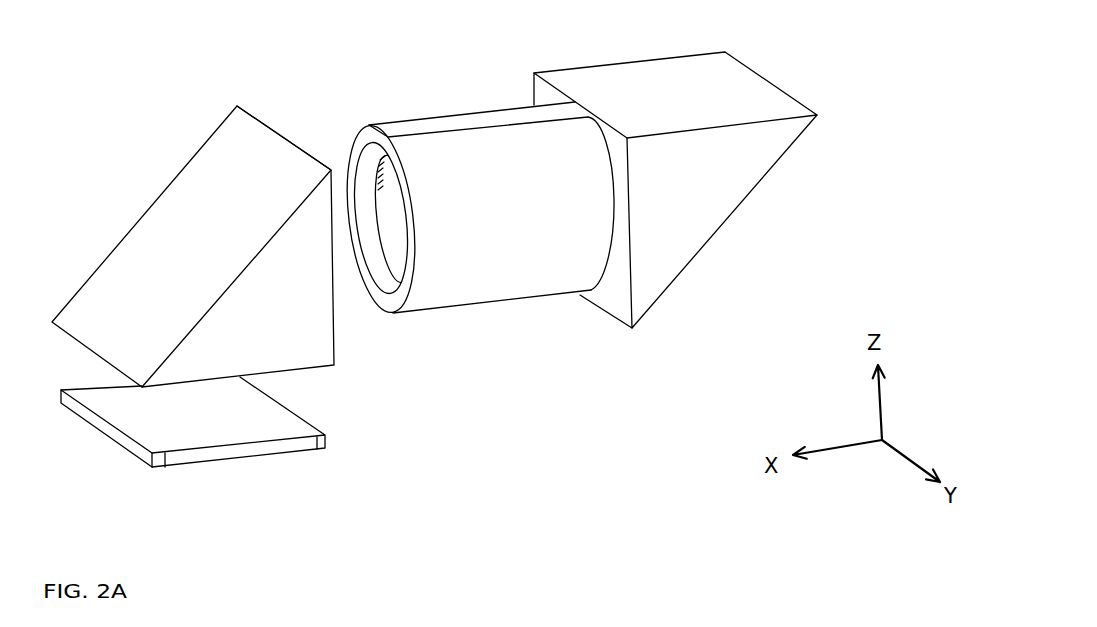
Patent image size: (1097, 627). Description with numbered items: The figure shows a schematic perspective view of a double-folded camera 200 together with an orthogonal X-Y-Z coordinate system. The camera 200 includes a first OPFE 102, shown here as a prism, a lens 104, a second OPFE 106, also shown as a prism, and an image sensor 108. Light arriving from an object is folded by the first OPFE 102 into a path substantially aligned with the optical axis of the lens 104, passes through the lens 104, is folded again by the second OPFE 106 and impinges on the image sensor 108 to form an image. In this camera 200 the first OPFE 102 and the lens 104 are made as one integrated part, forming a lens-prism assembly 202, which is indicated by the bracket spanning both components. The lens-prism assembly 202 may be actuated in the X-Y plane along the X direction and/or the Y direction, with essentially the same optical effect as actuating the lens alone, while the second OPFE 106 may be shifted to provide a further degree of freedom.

The double-folded camera 200 is at (429, 56).
The first OPFE 102 is at (738, 200).
The lens 104 is at (503, 243).
The second OPFE 106 is at (137, 233).
The image sensor 108 is at (230, 442).
The lens-prism assembly 202 is at (792, 325).